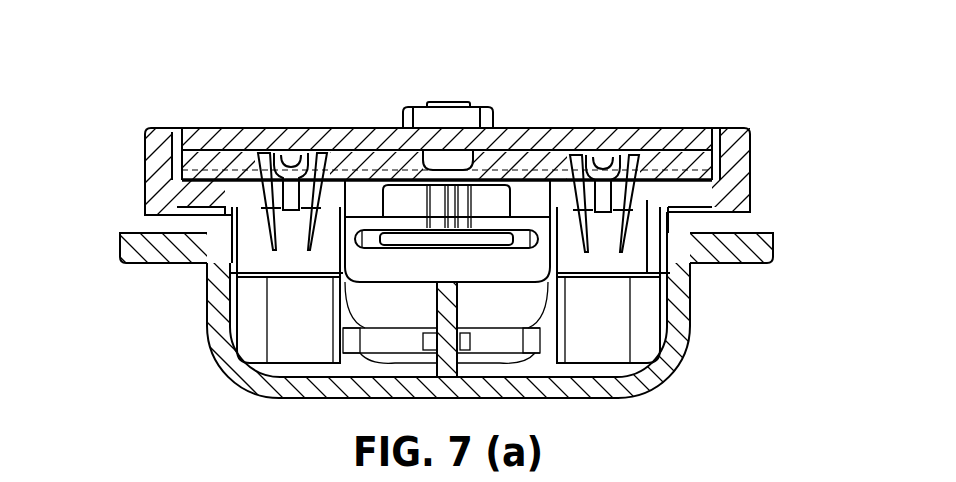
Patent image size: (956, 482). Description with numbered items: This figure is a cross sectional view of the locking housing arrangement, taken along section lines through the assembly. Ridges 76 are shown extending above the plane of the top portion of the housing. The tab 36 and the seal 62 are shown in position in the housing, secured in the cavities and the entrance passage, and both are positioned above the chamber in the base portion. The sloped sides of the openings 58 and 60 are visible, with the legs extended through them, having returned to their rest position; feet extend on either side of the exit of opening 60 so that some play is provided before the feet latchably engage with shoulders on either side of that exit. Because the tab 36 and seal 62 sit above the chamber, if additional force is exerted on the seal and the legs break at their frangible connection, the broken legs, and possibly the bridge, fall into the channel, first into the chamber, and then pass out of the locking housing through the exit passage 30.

The exit passage 30 is at (497, 348).
The tab 36 is at (547, 155).
The opening 58 is at (637, 166).
The opening 60 is at (646, 195).
The seal 62 is at (540, 125).
The ridge 76 is at (737, 127).